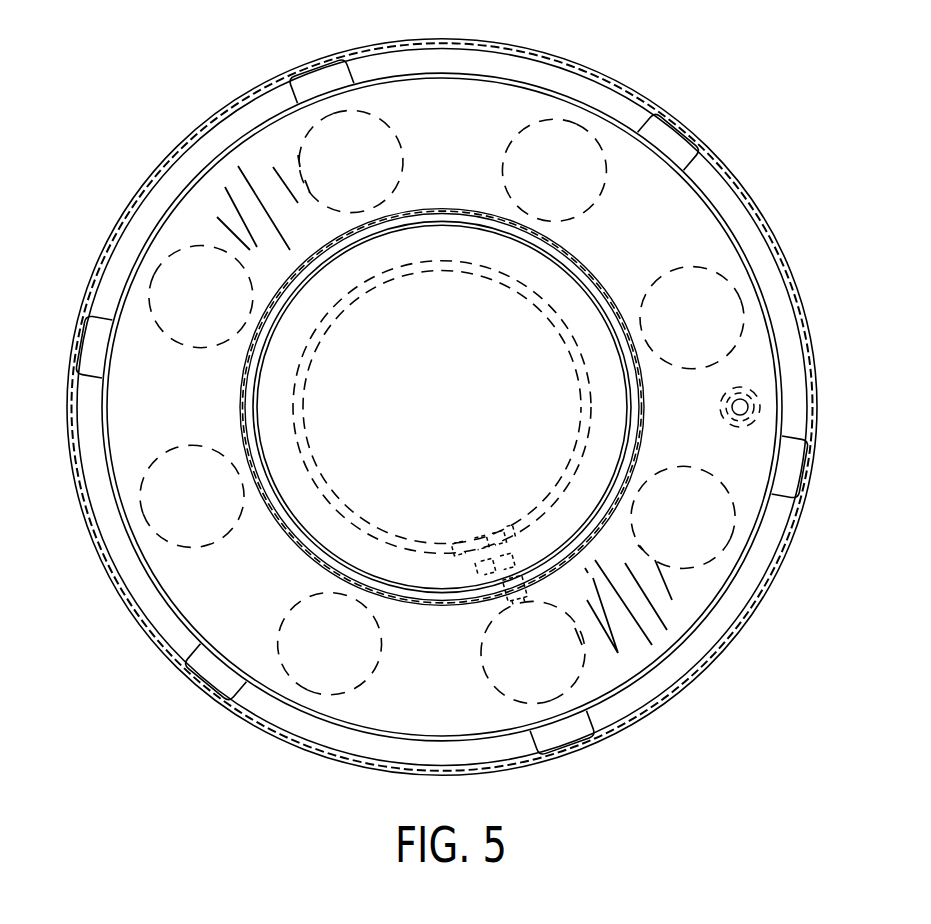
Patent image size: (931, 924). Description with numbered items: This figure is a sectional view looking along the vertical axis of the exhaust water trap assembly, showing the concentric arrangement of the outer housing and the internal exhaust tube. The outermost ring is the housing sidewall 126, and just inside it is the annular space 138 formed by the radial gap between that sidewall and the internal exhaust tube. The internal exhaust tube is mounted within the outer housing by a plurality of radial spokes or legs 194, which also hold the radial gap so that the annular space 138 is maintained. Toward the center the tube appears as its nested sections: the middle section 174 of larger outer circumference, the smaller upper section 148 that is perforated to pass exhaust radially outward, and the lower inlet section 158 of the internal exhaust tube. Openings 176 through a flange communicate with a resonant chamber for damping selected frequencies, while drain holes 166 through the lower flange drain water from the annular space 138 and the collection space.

The housing sidewall 126 is at (737, 186).
The annular space 138 is at (597, 98).
The upper section 148 is at (592, 288).
The lower section 158 is at (333, 344).
The drain holes 166 is at (727, 417).
The middle section 174 is at (455, 67).
The openings 176 is at (676, 274).
The radial spokes or legs 194 is at (290, 100).